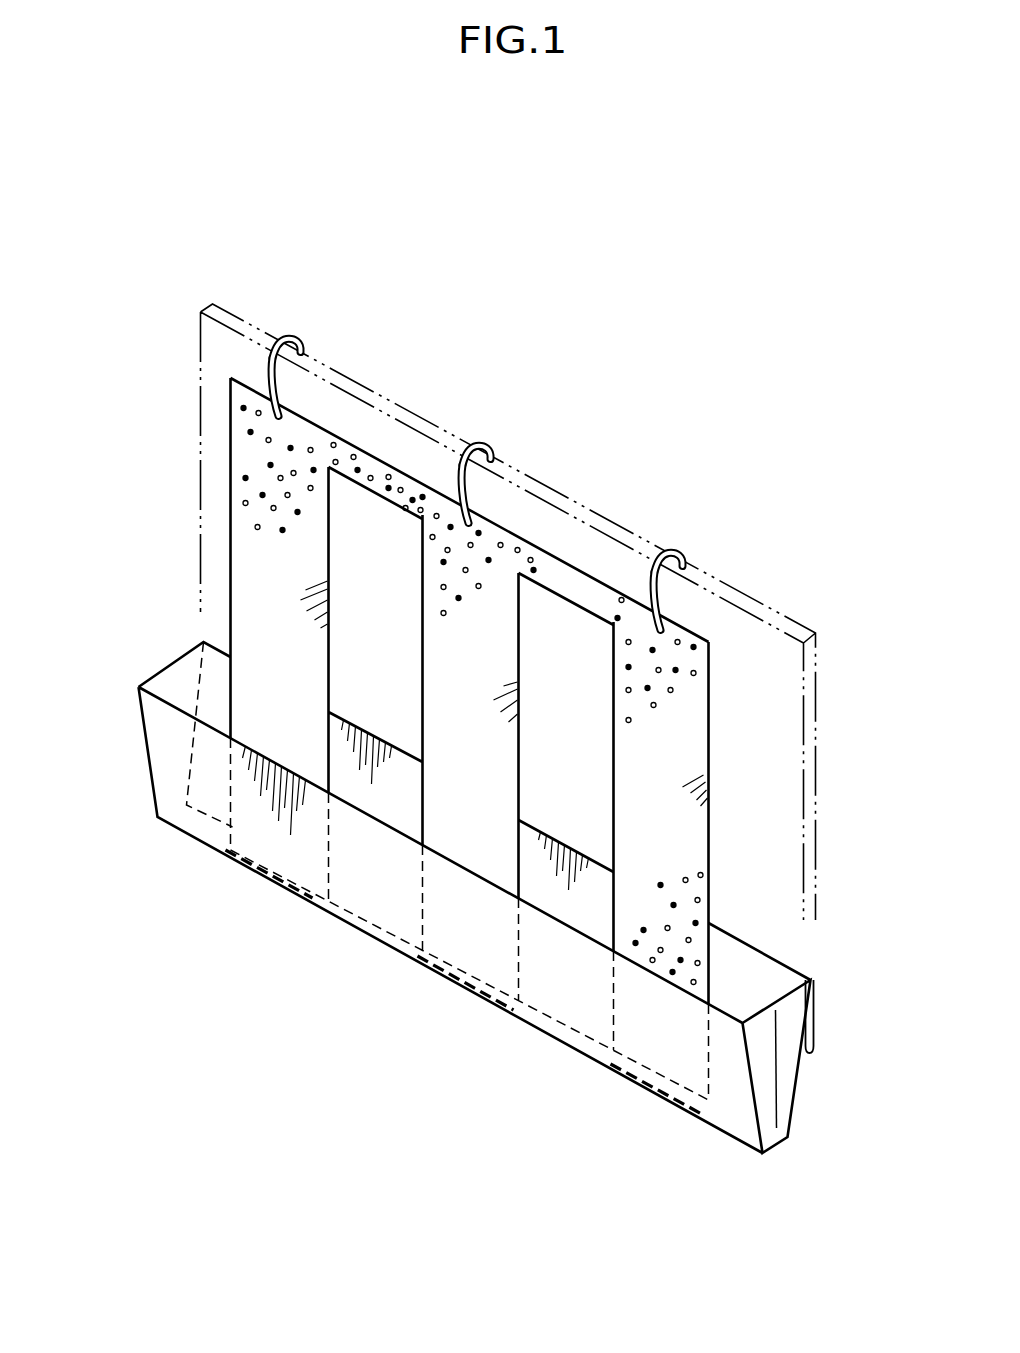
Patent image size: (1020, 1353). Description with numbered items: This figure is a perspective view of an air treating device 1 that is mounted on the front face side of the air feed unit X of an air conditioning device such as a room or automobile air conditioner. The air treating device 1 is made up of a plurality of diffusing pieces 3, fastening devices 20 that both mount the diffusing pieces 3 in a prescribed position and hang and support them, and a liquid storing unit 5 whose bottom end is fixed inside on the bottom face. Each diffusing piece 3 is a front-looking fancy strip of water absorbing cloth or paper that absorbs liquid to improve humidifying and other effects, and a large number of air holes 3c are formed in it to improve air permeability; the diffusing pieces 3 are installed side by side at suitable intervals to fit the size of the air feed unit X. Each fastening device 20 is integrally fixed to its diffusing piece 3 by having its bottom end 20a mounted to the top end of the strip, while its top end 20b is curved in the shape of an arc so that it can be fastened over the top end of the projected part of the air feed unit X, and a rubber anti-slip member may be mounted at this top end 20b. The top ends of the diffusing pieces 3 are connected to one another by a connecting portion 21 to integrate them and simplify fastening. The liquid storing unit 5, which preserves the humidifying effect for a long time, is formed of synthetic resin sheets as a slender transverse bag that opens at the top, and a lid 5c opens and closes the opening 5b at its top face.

The air treating device 1 is at (489, 698).
The diffusing piece 3 is at (437, 682).
The air holes 3c is at (262, 497).
The liquid storing unit 5 is at (489, 897).
The opening 5b is at (177, 678).
The lid 5c is at (813, 1035).
The fastening device 20 is at (481, 437).
The bottom end of fastening device 20a is at (228, 372).
The top end of fastening device 20b is at (303, 350).
The connecting portion 21 is at (567, 588).
The air feed unit X is at (207, 515).